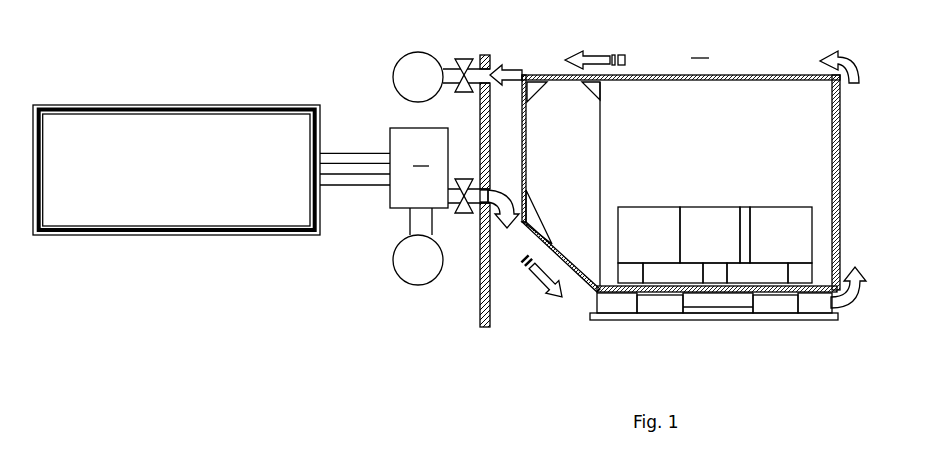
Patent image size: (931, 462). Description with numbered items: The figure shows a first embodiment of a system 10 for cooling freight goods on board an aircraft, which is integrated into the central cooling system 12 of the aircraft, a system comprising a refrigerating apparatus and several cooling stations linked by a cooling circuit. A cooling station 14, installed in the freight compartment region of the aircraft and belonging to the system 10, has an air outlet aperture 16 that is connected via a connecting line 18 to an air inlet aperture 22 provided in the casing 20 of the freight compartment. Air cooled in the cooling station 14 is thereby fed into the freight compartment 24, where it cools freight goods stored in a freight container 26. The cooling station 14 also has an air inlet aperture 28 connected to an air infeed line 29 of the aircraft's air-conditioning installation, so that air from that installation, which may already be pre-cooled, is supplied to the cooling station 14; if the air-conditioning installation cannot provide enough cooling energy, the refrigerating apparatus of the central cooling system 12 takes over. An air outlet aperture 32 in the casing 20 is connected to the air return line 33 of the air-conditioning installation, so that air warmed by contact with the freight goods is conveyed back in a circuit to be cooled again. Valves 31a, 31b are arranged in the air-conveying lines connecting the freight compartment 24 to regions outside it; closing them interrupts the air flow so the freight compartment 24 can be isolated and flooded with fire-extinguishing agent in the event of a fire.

The system for cooling freight goods 10 is at (304, 68).
The central cooling system 12 is at (130, 96).
The cooling station 14 is at (384, 168).
The air outlet aperture 16 is at (445, 208).
The connecting line 18 is at (473, 213).
The casing 20 is at (479, 307).
The air inlet aperture 22 is at (492, 187).
The freight compartment 24 is at (693, 179).
The freight container 26 is at (840, 130).
The air inlet aperture 28 is at (409, 210).
The air infeed line 29 is at (394, 265).
The valve 31a is at (464, 178).
The valve 31b is at (465, 58).
The air outlet aperture 32 is at (491, 72).
The air return line 33 is at (399, 66).